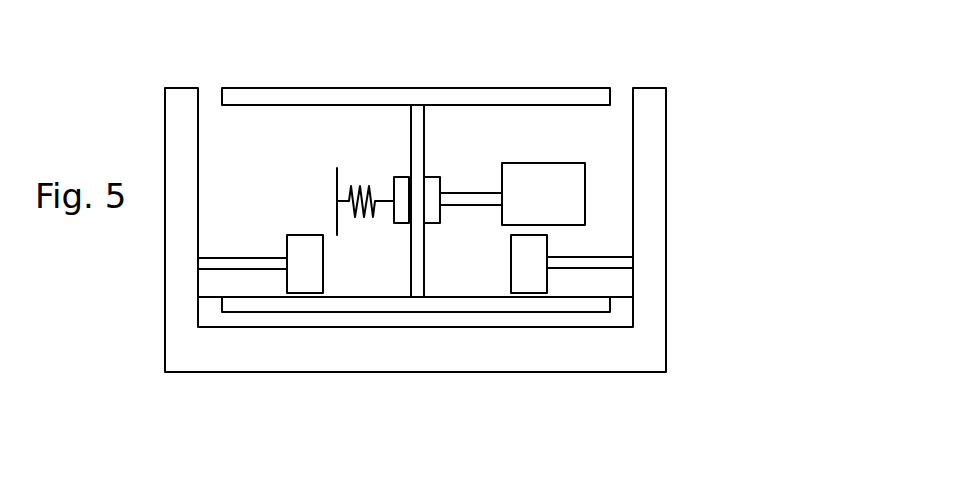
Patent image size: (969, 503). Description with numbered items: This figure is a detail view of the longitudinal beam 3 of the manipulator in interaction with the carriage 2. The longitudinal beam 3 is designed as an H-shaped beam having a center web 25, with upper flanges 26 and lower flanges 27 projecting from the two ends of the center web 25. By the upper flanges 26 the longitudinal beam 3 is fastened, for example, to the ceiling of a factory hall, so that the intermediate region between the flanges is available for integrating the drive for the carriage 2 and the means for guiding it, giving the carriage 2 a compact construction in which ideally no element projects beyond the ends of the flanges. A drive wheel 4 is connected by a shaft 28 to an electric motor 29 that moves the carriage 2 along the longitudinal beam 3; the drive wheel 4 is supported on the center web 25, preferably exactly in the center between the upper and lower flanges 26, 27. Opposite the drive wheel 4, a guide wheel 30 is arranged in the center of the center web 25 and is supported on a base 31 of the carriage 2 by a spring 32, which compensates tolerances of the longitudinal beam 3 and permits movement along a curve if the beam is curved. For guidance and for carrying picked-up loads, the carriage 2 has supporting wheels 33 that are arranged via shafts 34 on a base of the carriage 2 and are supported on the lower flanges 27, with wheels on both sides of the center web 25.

The carriage 2 is at (652, 253).
The longitudinal beam 3 is at (690, 122).
The drive wheel 4 is at (432, 213).
The center web 25 is at (421, 158).
The upper flanges 26 is at (543, 100).
The lower flanges 27 is at (488, 302).
The shaft 28 is at (470, 197).
The electric motor 29 is at (531, 201).
The guide wheel 30 is at (401, 176).
The base 31 is at (336, 184).
The spring 32 is at (358, 182).
The supporting wheel 33 is at (313, 260).
The shaft 34 is at (237, 257).